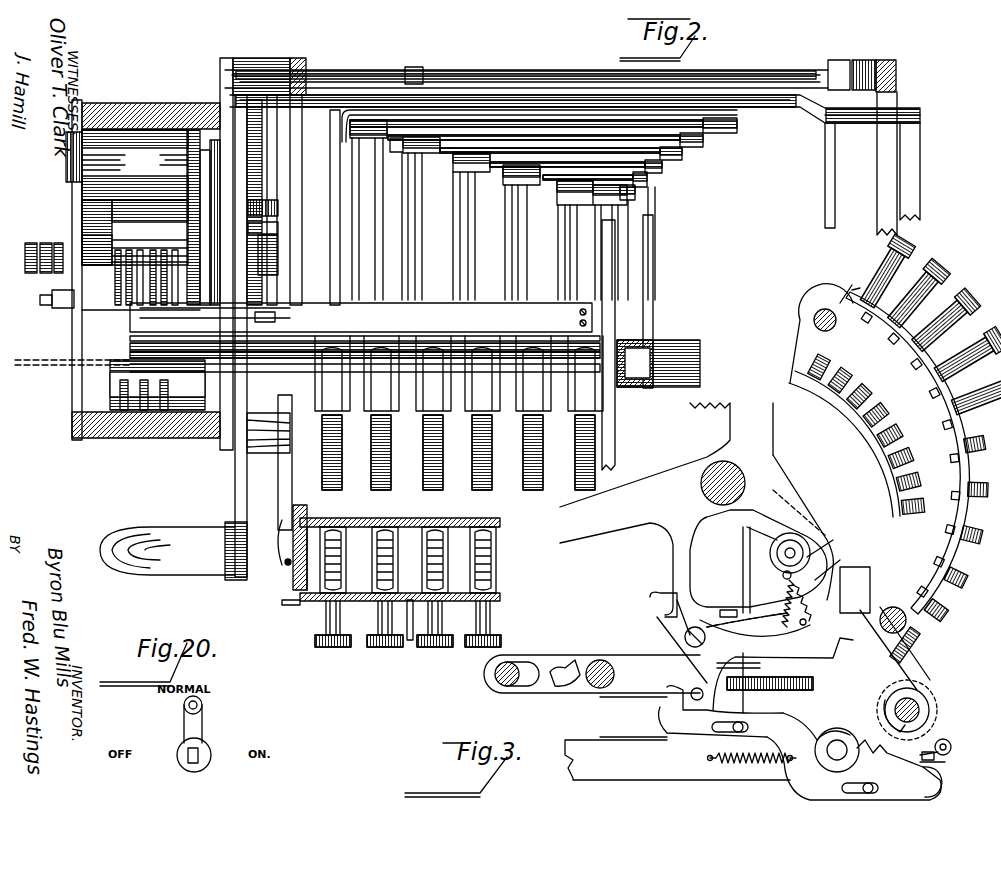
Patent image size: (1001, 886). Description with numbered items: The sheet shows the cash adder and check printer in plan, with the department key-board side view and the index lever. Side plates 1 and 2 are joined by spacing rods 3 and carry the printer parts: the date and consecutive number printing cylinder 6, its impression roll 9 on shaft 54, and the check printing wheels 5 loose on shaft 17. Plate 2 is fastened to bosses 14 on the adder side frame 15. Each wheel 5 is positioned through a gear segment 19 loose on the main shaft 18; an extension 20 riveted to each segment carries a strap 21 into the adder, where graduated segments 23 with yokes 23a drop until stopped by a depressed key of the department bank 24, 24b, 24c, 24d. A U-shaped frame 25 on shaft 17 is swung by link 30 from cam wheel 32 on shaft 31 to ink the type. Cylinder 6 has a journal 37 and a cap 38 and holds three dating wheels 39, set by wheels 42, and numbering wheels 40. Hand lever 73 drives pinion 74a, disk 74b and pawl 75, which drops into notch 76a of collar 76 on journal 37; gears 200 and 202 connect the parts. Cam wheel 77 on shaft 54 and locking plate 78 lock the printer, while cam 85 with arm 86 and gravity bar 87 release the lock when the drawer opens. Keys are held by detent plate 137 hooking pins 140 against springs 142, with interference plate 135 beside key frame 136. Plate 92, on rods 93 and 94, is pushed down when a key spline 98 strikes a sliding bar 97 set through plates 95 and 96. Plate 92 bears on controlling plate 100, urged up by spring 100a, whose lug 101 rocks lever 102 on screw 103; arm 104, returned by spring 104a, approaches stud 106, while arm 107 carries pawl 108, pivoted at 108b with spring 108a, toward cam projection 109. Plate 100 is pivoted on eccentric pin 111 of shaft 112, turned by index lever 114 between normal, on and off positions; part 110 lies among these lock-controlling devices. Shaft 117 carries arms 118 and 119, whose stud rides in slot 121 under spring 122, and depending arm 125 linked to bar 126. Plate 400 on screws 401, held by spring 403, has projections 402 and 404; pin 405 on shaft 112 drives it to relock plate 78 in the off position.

In FIG. 2, the side plate 1 is at (75, 392).
In FIG. 2, the side plate 2 is at (220, 82).
In FIG. 2, the spacing rods 3 is at (170, 112).
In FIG. 2, the check printing wheels 5 is at (162, 405).
In FIG. 2, the date and consecutive number printing cylinder 6 is at (135, 223).
In FIG. 2, the impression roll 9 is at (135, 165).
In FIG. 2, the bosses 14 is at (270, 66).
In FIG. 3, the bosses 14 is at (775, 556).
In FIG. 2, the side frame 15 is at (305, 95).
In FIG. 3, the side frame 15 is at (598, 766).
In FIG. 2, the shaft 17 is at (75, 362).
In FIG. 2, the main shaft 18 is at (668, 360).
In FIG. 3, the main shaft 18 is at (712, 476).
In FIG. 2, the gear segment 19 is at (52, 298).
In FIG. 2, the extension 20 is at (128, 348).
In FIG. 2, the straps 21 is at (361, 317).
In FIG. 2, the graduated segments 23 is at (528, 438).
In FIG. 2, the yokes 23a is at (567, 140).
In FIG. 2, the keys 24 is at (336, 648).
In FIG. 3, the keys 24 is at (895, 275).
In FIG. 2, the plunger 24b is at (382, 650).
In FIG. 2, the plunger 24c is at (438, 650).
In FIG. 2, the plunger 24d is at (503, 648).
In FIG. 2, the U-shaped frame 25 is at (112, 388).
In FIG. 2, the link 30 is at (207, 290).
In FIG. 2, the shaft 31 is at (160, 204).
In FIG. 2, the cam wheel 32 is at (200, 204).
In FIG. 3, the journal 37 is at (606, 660).
In FIG. 2, the cap 38 is at (95, 230).
In FIG. 2, the dating type wheels 39 is at (130, 256).
In FIG. 2, the consecutive numbering type wheels 40 is at (172, 256).
In FIG. 2, the setting wheels 42 is at (56, 243).
In FIG. 2, the shaft 54 is at (100, 160).
In FIG. 3, the shaft 54 is at (495, 675).
In FIG. 2, the hand lever 73 is at (235, 500).
In FIG. 2, the pinion 74a is at (242, 232).
In FIG. 2, the disk 74b is at (270, 322).
In FIG. 2, the spring pressed pawl 75 is at (230, 218).
In FIG. 2, the collar 76 is at (280, 262).
In FIG. 2, the notch 76a is at (222, 247).
In FIG. 2, the cam wheel 77 is at (296, 62).
In FIG. 2, the locking plate 78 is at (262, 262).
In FIG. 3, the locking plate 78 is at (566, 660).
In FIG. 3, the cam 85 is at (668, 568).
In FIG. 3, the arm 86 is at (666, 509).
In FIG. 2, the gravity bar 87 is at (732, 88).
In FIG. 2, the plate 92 is at (320, 590).
In FIG. 3, the plate 92 is at (945, 512).
In FIG. 3, the rod 93 is at (813, 325).
In FIG. 3, the rod 94 is at (894, 607).
In FIG. 2, the plate 95 is at (285, 562).
In FIG. 2, the plate 96 is at (292, 578).
In FIG. 2, the sliding bars 97 is at (285, 600).
In FIG. 3, the spline 98 is at (940, 332).
In FIG. 3, the controlling plate 100 is at (925, 692).
In FIG. 3, the spring 100a is at (917, 644).
In FIG. 3, the lug 101 is at (860, 633).
In FIG. 3, the lever 102 is at (755, 656).
In FIG. 3, the shouldered screw 103 is at (684, 640).
In FIG. 3, the arm 104 is at (760, 667).
In FIG. 3, the spring 104a is at (815, 683).
In FIG. 3, the stud 106 is at (703, 697).
In FIG. 3, the arm 107 is at (823, 580).
In FIG. 3, the pawl 108 is at (785, 580).
In FIG. 3, the spring 108a is at (798, 610).
In FIG. 3, the pivot 108b is at (797, 590).
In FIG. 3, the cam projection 109 is at (728, 610).
In FIG. 3, the stop 110 is at (663, 625).
In FIG. 3, the pin 111 is at (955, 752).
In FIG. 3, the short shaft 112 is at (945, 738).
In FIG. 20, the short shaft 112 is at (182, 751).
In FIG. 20, the index lever 114 is at (196, 730).
In FIG. 2, the shaft 117 is at (590, 78).
In FIG. 2, the arm 118 is at (362, 90).
In FIG. 2, the arm 119 is at (826, 150).
In FIG. 3, the slotted opening 121 is at (570, 685).
In FIG. 2, the spring 122 is at (862, 62).
In FIG. 2, the depending arm 125 is at (420, 75).
In FIG. 2, the bar 126 is at (410, 410).
In FIG. 2, the interference plate 135 is at (358, 520).
In FIG. 2, the key frame 136 is at (318, 605).
In FIG. 3, the key frame 136 is at (958, 421).
In FIG. 2, the detent plate 137 is at (395, 572).
In FIG. 2, the pins 140 is at (392, 640).
In FIG. 2, the spring 142 is at (440, 565).
In FIG. 3, the spring 142 is at (850, 425).
In FIG. 2, the gear 200 is at (192, 150).
In FIG. 2, the gear 202 is at (205, 300).
In FIG. 3, the plate 400 is at (805, 742).
In FIG. 3, the headed screws 401 is at (730, 735).
In FIG. 3, the upturned projection 402 is at (682, 712).
In FIG. 3, the spring 403 is at (733, 765).
In FIG. 3, the upturned projection 404 is at (945, 785).
In FIG. 3, the pin 405 is at (945, 758).